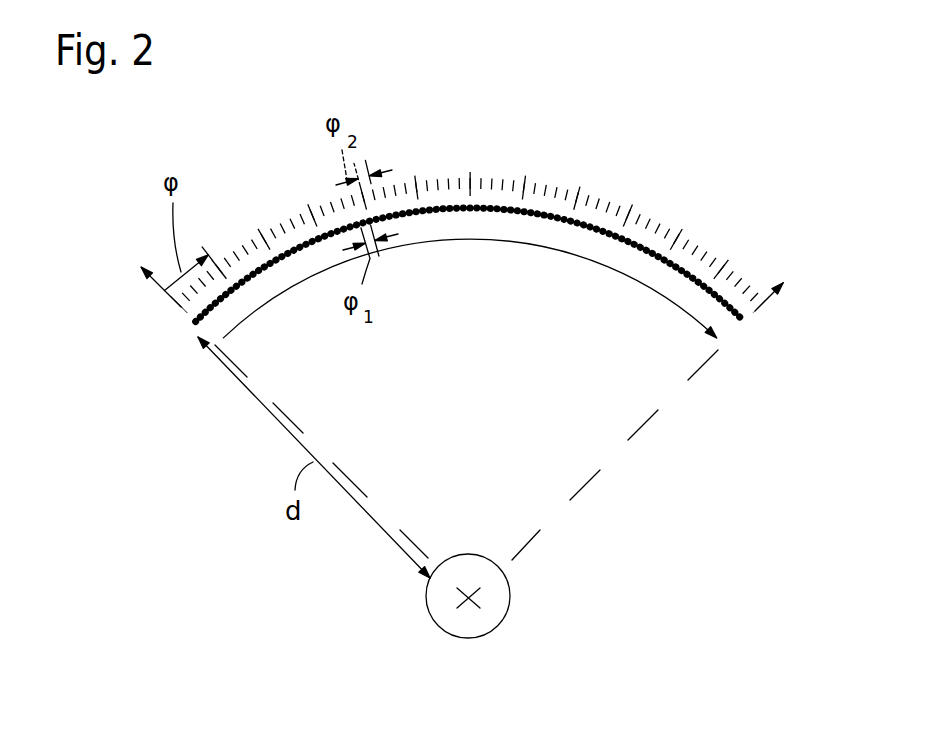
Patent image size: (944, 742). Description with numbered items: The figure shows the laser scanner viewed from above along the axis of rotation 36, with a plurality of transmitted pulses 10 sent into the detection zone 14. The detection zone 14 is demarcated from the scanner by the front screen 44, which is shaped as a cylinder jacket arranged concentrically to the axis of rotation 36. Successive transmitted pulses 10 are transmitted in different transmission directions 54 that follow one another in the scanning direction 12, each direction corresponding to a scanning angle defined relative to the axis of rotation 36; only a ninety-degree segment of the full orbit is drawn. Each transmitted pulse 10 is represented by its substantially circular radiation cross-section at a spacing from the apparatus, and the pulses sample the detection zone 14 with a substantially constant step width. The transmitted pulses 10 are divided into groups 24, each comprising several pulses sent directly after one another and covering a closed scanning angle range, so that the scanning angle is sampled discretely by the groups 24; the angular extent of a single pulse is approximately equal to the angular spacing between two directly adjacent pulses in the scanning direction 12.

The transmitted pulses 10 is at (196, 329).
The scanning direction 12 is at (695, 322).
The detection zone 14 is at (491, 415).
The groups 24 is at (687, 235).
The axis of rotation 36 is at (468, 601).
The front screen 44 is at (497, 630).
The transmission directions 54 is at (156, 284).